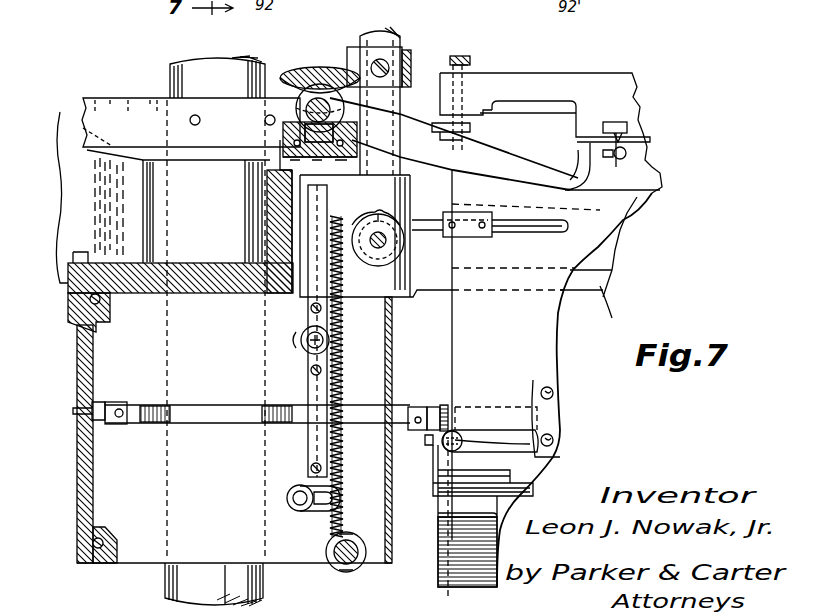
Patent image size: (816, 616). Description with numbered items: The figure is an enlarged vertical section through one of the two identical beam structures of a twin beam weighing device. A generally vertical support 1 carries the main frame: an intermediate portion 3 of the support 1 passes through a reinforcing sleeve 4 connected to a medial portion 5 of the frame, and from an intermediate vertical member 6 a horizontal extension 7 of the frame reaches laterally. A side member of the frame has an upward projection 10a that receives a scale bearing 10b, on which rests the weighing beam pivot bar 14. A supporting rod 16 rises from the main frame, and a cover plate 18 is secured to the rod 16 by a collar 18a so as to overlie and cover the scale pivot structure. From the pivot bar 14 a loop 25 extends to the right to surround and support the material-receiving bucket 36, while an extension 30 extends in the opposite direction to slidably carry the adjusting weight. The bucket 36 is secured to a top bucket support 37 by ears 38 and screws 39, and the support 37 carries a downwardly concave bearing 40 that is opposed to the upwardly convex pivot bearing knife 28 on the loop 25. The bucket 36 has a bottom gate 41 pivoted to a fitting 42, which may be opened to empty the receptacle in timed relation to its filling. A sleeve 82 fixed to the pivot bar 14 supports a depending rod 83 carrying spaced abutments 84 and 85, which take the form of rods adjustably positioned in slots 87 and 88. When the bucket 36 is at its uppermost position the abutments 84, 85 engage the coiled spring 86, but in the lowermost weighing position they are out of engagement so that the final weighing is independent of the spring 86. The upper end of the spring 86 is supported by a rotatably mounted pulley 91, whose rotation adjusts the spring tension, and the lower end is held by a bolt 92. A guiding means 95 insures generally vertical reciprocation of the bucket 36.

The support 1 is at (167, 585).
The intermediate portion 3 is at (183, 78).
The reinforcing sleeve 4 is at (157, 209).
The medial portion 5 is at (66, 274).
The intermediate vertical member 6 is at (270, 222).
The horizontal extension 7 is at (612, 307).
The upward projection 10a is at (283, 133).
The scale bearing 10b is at (305, 118).
The weighing beam pivot bar 14 is at (345, 115).
The supporting rod 16 is at (380, 36).
The cover plate 18 is at (322, 70).
The collar 18a is at (408, 65).
The loop 25 is at (514, 158).
The pivot bearing knife 28 is at (647, 147).
The extension 30 is at (145, 115).
The material-receiving bucket 36 is at (540, 352).
The top bucket support 37 is at (598, 76).
The ear 38 is at (440, 126).
The screw 39 is at (462, 56).
The downwardly concave bearing 40 is at (627, 127).
The bottom gate 41 is at (468, 587).
The fitting 42 is at (484, 437).
The sleeve 82 is at (320, 98).
The rod 83 is at (306, 390).
The abutment 84 is at (301, 343).
The abutment 85 is at (298, 510).
The coiled spring 86 is at (343, 384).
The slot 87 is at (308, 335).
The slot 88 is at (322, 511).
The pulley 91 is at (390, 248).
The bolt 92 is at (335, 568).
The guiding means 95 is at (400, 407).